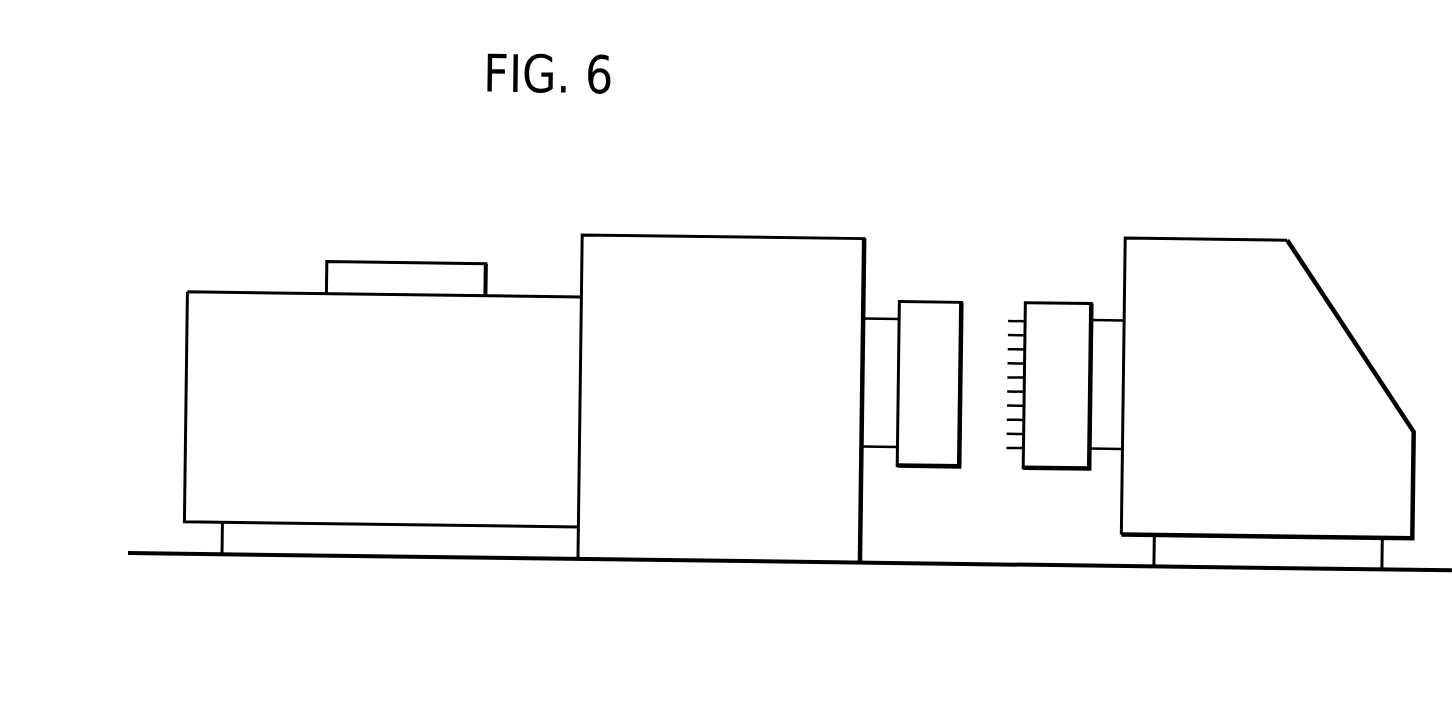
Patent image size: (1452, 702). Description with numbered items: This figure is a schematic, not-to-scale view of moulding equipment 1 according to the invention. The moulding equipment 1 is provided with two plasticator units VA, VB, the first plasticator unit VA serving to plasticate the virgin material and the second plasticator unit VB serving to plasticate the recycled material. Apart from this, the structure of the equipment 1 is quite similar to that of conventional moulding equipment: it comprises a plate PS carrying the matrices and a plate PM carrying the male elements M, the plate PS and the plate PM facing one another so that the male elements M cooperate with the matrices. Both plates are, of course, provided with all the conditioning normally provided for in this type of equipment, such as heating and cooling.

The plasticator unit VA is at (374, 215).
The plasticator unit VB is at (364, 242).
The plate carrying the matrices PS is at (924, 290).
The male elements M is at (1010, 277).
The plate carrying the male elements PM is at (1068, 290).
The moulding equipment 1 is at (1331, 220).